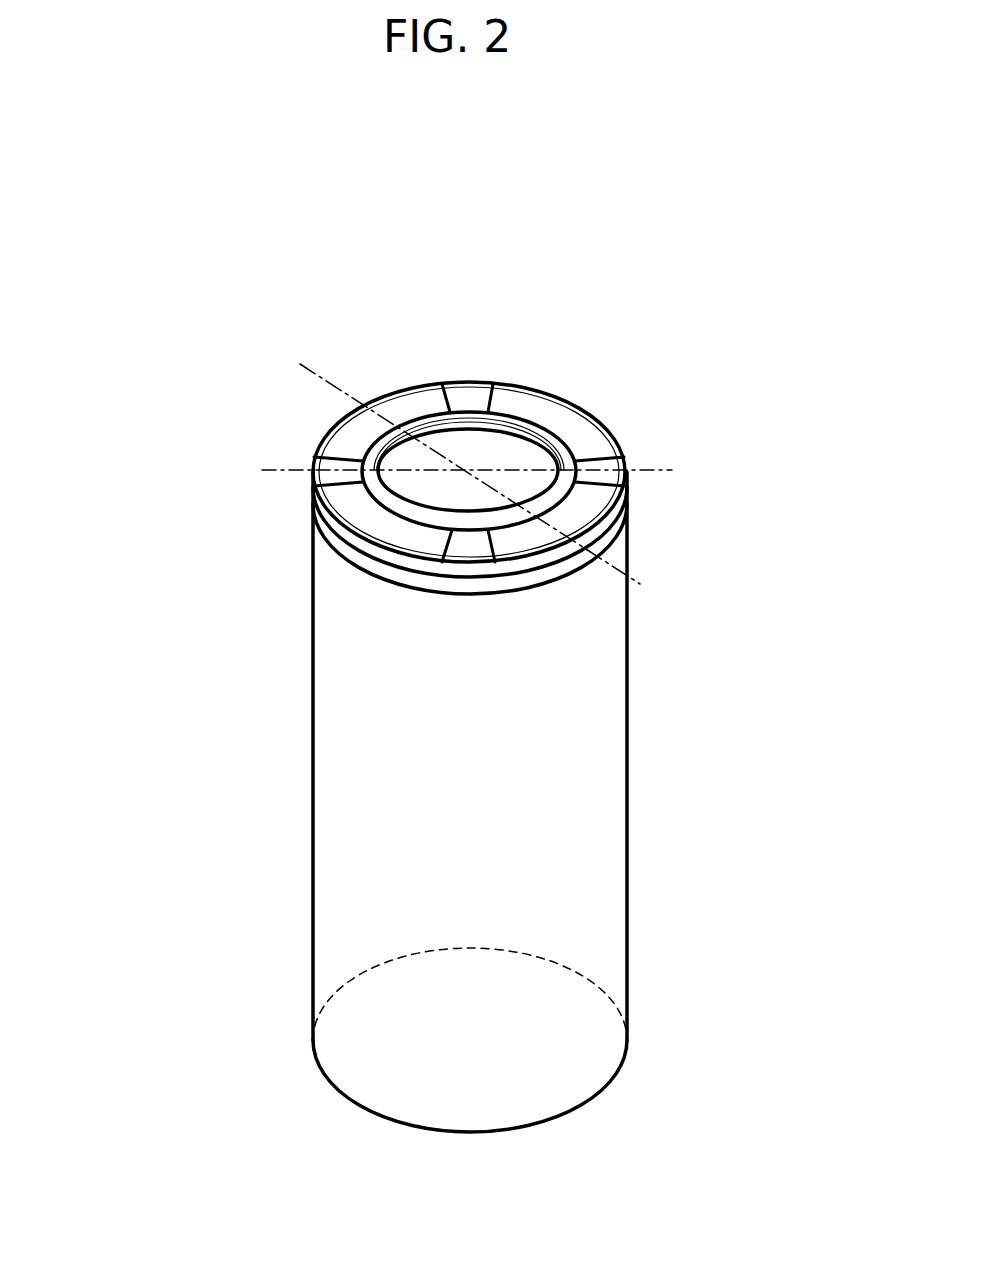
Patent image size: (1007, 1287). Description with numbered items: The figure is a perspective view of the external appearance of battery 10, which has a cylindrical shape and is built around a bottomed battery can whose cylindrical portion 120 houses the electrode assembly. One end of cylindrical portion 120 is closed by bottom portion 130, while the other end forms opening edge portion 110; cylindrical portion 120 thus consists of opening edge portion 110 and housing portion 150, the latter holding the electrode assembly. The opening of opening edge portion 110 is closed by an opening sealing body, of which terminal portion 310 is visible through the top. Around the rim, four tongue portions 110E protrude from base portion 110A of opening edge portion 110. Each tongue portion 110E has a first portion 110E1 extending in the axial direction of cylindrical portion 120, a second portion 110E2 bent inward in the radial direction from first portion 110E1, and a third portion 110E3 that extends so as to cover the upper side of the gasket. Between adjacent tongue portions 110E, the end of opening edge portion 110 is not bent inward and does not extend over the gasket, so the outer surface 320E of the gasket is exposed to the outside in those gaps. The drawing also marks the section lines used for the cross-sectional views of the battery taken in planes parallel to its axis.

The battery 10 is at (293, 283).
The opening edge portion 110 is at (770, 430).
The tongue portion 110E is at (587, 435).
The base portion 110A is at (627, 518).
The first portion 110E1 is at (358, 522).
The second portion 110E2 is at (350, 502).
The third portion 110E3 is at (465, 570).
The cylindrical portion 120 is at (551, 756).
The bottom portion 130 is at (487, 1098).
The housing portion 150 is at (593, 828).
The terminal portion 310 is at (495, 443).
The outer surface of gasket 320E is at (468, 397).